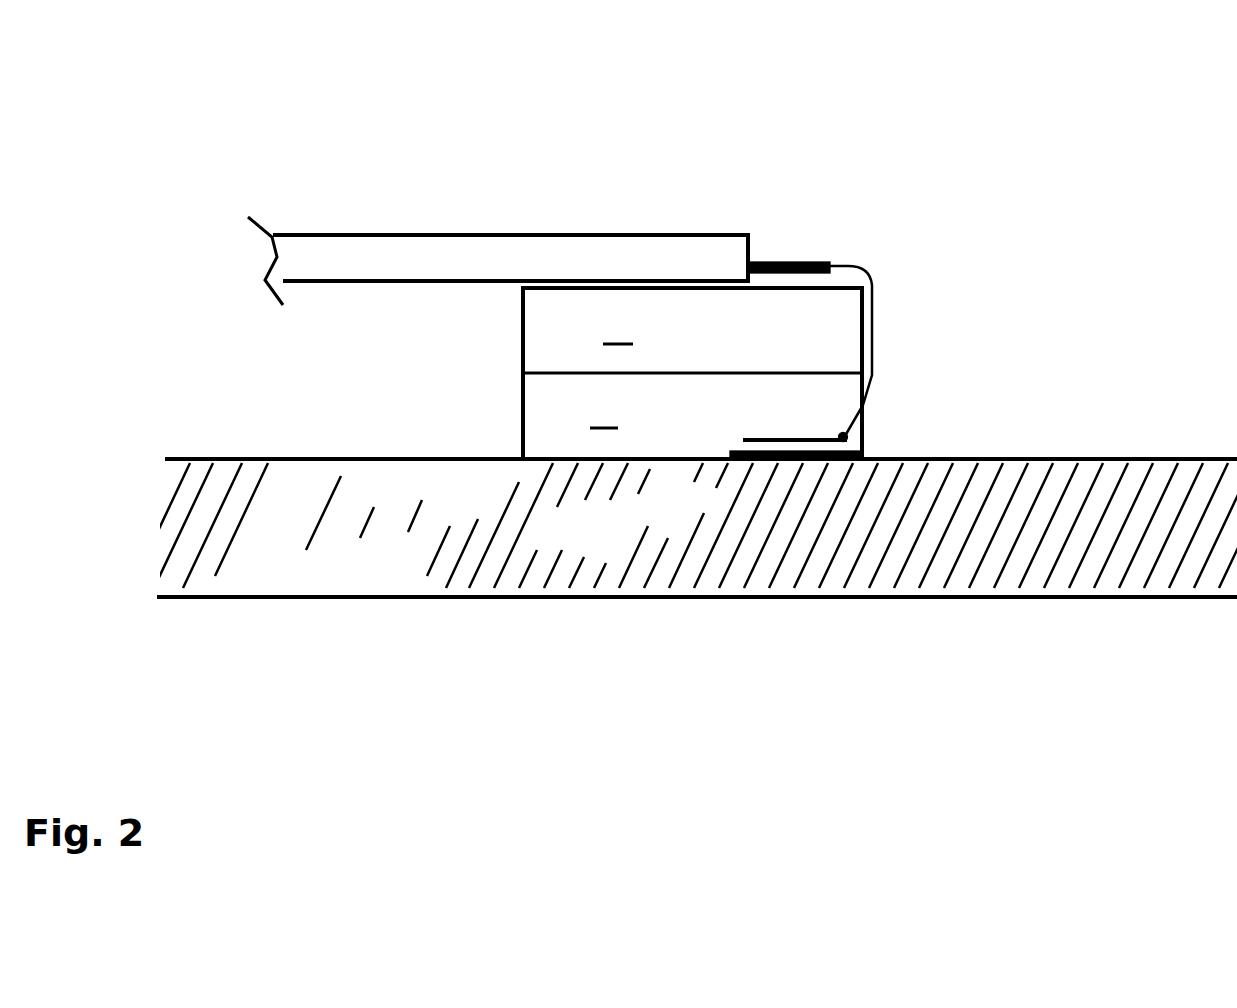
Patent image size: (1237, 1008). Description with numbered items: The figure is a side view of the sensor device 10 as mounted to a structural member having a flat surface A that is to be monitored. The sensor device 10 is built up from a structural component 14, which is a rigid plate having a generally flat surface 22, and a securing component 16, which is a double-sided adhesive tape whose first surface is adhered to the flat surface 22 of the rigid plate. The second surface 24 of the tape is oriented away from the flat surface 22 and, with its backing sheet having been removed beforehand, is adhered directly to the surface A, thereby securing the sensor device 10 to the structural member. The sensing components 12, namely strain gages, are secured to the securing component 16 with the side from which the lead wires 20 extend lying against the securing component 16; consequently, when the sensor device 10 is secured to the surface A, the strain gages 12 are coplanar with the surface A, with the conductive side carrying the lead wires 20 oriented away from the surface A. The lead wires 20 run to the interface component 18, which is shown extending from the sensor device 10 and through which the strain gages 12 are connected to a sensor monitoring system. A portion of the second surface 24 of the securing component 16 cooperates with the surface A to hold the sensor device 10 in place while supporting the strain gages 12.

The sensor device 10 is at (916, 198).
The sensing components 12 is at (817, 463).
The structural component 14 is at (692, 330).
The securing component 16 is at (692, 416).
The interface component 18 is at (473, 247).
The lead wires 20 is at (873, 313).
The flat surface 22 is at (553, 375).
The second surface 24 is at (547, 462).
The surface A is at (417, 459).